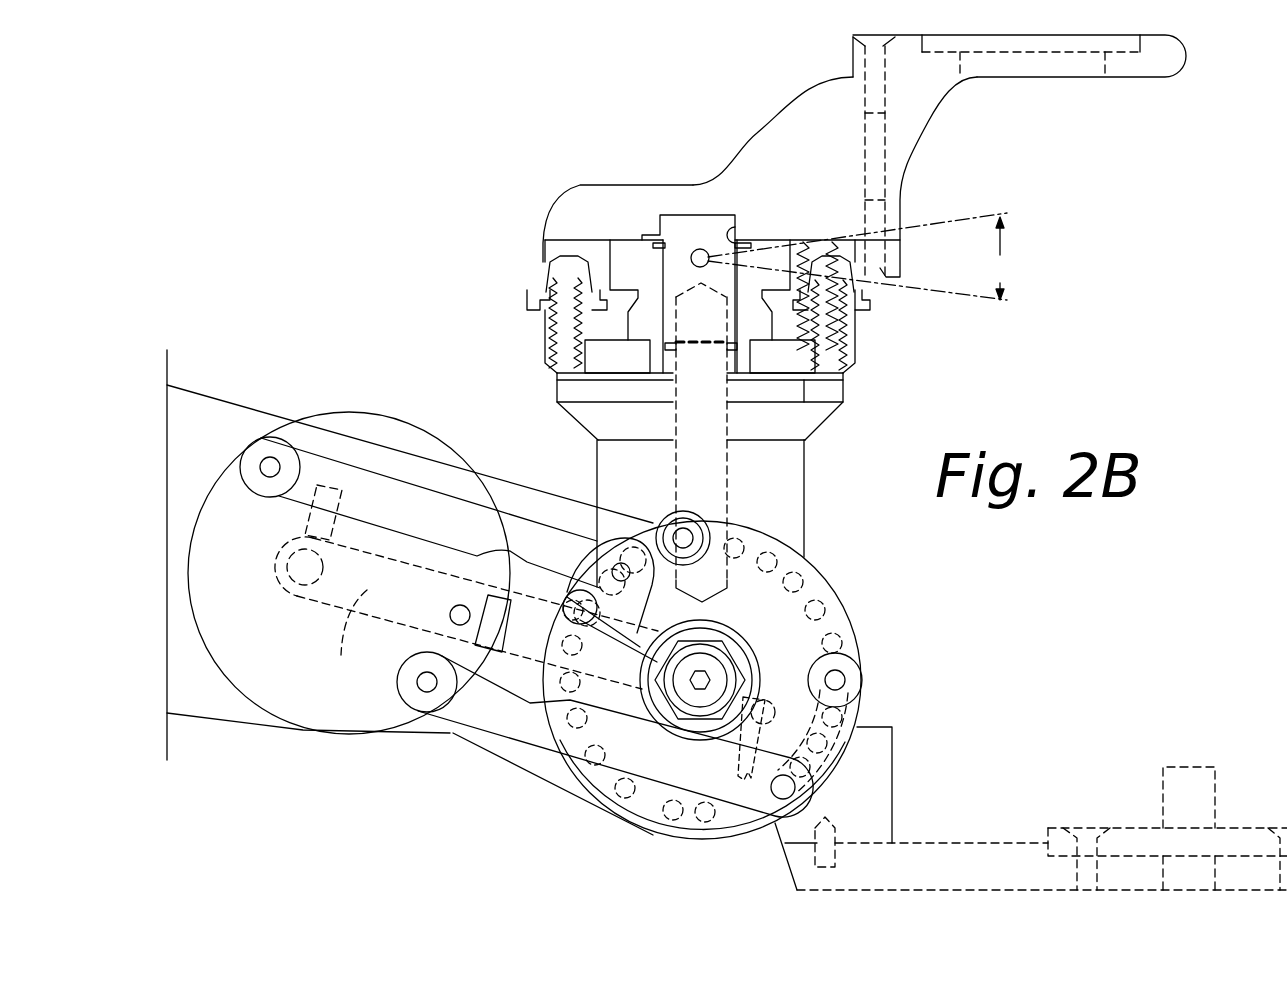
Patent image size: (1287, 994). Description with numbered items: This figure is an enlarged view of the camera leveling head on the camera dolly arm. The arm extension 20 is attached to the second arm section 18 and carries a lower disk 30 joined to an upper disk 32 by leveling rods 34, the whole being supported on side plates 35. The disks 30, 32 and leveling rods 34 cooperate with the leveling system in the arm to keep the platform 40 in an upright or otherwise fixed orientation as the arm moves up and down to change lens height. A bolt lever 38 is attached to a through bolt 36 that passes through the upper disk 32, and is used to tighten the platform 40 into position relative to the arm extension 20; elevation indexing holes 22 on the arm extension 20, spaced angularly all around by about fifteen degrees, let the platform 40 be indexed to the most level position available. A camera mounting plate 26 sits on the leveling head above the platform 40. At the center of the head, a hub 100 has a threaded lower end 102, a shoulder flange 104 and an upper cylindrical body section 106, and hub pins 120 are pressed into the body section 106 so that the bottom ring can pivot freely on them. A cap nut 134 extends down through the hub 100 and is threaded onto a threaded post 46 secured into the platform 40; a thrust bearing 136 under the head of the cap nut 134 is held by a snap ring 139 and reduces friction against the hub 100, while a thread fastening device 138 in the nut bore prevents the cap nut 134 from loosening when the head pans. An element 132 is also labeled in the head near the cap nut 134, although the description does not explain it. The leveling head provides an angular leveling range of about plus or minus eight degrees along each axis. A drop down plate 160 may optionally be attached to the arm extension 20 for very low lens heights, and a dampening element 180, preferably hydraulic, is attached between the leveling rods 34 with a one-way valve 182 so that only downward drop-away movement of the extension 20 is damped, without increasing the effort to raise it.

The second arm section 18 is at (204, 415).
The arm extension 20 is at (492, 473).
The elevation indexing holes 22 is at (827, 640).
The camera mounting plate 26 is at (1163, 58).
The lower disk 30 is at (338, 710).
The upper disk 32 is at (651, 813).
The leveling rods 34 is at (510, 712).
The side plates 35 is at (552, 765).
The through bolt 36 is at (717, 667).
The bolt lever 38 is at (705, 655).
The platform 40 is at (788, 528).
The threaded post 46 is at (712, 497).
The hub 100 is at (637, 306).
The threaded lower end 102 is at (742, 362).
The shoulder flange 104 is at (752, 325).
The upper cylindrical body section 106 is at (745, 295).
The hub pins 120 is at (610, 240).
The pivot hole 132 is at (702, 250).
The cap nut 134 is at (680, 227).
The thrust bearing 136 is at (630, 270).
The thread fastening device 138 is at (685, 350).
The snap ring 139 is at (735, 233).
The drop down plate 160 is at (943, 870).
The dampening element 180 is at (466, 613).
The 1-way valve 182 is at (468, 590).